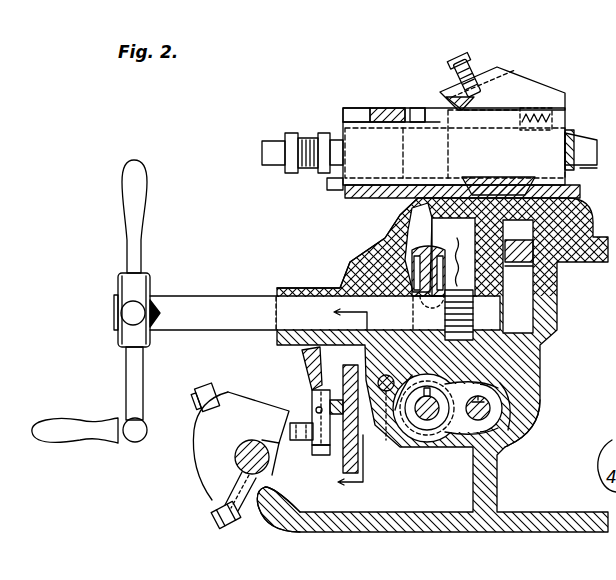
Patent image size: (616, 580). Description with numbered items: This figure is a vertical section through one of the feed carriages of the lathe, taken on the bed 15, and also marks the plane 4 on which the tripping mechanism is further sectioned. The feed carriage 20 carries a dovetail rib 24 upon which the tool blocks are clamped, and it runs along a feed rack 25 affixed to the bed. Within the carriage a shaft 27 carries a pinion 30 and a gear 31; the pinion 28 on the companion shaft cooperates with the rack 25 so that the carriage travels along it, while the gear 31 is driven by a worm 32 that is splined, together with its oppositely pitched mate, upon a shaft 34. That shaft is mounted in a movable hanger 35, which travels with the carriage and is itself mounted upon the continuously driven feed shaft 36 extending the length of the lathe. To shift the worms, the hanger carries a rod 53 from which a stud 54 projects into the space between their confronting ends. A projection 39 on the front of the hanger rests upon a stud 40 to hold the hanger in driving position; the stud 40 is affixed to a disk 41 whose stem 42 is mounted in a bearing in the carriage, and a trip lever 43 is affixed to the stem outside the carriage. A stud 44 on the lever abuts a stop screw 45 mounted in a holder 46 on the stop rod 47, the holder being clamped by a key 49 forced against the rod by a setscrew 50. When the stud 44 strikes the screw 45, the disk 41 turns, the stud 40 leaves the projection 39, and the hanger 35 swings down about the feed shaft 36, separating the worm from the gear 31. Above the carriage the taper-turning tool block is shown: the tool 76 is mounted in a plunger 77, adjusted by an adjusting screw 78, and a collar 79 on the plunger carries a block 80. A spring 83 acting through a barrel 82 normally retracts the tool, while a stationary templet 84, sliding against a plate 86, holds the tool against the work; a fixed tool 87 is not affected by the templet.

The section plane line 4— 4 is at (337, 401).
The bed 15 is at (535, 345).
The feed carriage 20 is at (365, 272).
The dovetail rib 24 is at (528, 185).
The feed rack 25 is at (518, 270).
The shaft 27 is at (325, 313).
The pinion 28 is at (91, 301).
The pinion 30 is at (443, 257).
The gear 31 is at (400, 245).
The worm 32 is at (440, 432).
The shaft 34 is at (446, 403).
The hanger 35 is at (530, 440).
The feed shaft 36 is at (500, 392).
The projection 39 is at (395, 440).
The stud 40 is at (372, 445).
The disk 41 is at (345, 432).
The stem 42 is at (337, 410).
The trip lever 43 is at (315, 470).
The stud 44 is at (308, 440).
The stop screw 45 is at (298, 422).
The holder 46 is at (239, 441).
The rod 47 is at (236, 452).
The key 49 is at (241, 464).
The setscrew 50 is at (220, 502).
The rod 53 is at (303, 362).
The stud 54 is at (427, 315).
The tool 76 is at (590, 152).
The plunger 77 is at (597, 168).
The adjusting screw 78 is at (319, 140).
The collar 79 is at (449, 153).
The block 80 is at (420, 108).
The barrel 82 is at (462, 90).
The spring 83 is at (560, 95).
The templet 84 is at (388, 108).
The plate 86 is at (357, 108).
The fixed tool 87 is at (578, 133).